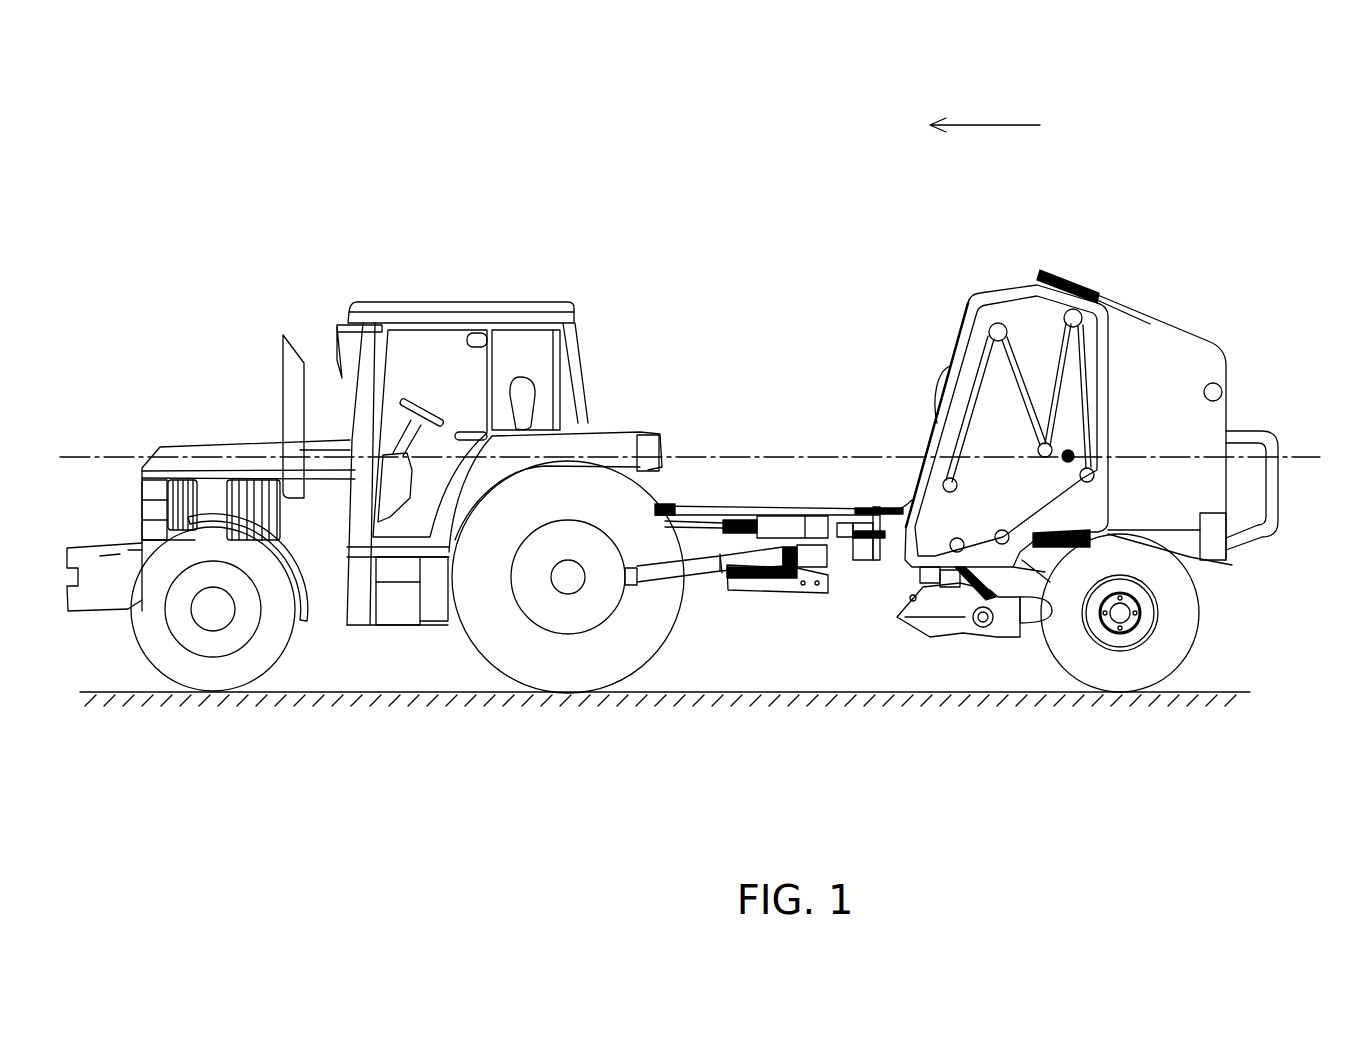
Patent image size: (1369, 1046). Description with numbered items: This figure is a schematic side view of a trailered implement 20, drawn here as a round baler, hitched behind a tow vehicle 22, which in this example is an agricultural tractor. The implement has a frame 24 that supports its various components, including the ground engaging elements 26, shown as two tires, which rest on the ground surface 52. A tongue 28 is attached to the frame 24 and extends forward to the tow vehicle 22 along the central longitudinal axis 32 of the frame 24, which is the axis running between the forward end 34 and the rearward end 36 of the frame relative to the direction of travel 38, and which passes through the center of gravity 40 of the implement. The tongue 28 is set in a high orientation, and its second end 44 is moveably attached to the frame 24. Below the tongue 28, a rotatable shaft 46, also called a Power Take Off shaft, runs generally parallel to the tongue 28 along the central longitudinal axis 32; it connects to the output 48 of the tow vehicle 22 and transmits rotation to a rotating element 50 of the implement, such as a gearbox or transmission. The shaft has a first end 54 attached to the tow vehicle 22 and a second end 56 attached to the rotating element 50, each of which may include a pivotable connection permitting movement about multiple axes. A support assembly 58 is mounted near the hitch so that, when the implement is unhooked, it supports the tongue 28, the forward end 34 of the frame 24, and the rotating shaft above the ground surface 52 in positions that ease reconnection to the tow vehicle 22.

The trailered implement 20 is at (1178, 316).
The tow vehicle 22 is at (407, 302).
The frame 24 is at (886, 592).
The ground engaging element 26 is at (1112, 672).
The tongue 28 is at (716, 501).
The central longitudinal axis 32 is at (1318, 461).
The forward end 34 is at (916, 497).
The rearward end 36 is at (1223, 399).
The direction of travel 38 is at (975, 125).
The center of gravity 40 is at (1072, 452).
The second end 44 is at (878, 563).
The rotatable shaft 46 is at (702, 575).
The output 48 is at (632, 588).
The rotating element 50 is at (1060, 348).
The ground surface 52 is at (118, 692).
The first end 54 is at (658, 582).
The second end 56 is at (820, 515).
The support assembly 58 is at (786, 605).